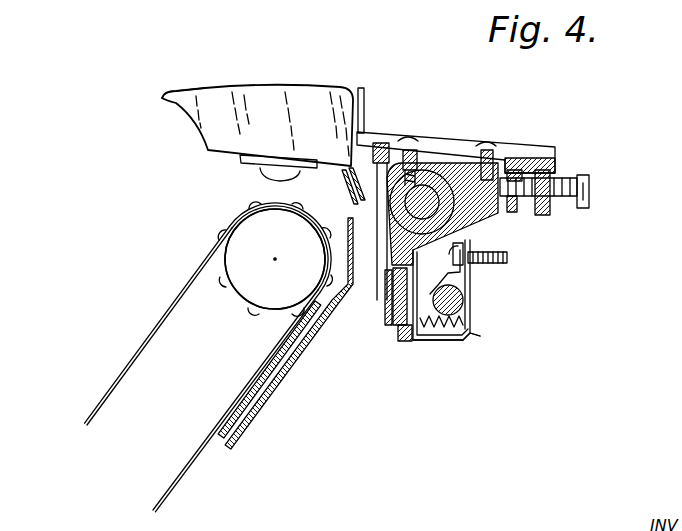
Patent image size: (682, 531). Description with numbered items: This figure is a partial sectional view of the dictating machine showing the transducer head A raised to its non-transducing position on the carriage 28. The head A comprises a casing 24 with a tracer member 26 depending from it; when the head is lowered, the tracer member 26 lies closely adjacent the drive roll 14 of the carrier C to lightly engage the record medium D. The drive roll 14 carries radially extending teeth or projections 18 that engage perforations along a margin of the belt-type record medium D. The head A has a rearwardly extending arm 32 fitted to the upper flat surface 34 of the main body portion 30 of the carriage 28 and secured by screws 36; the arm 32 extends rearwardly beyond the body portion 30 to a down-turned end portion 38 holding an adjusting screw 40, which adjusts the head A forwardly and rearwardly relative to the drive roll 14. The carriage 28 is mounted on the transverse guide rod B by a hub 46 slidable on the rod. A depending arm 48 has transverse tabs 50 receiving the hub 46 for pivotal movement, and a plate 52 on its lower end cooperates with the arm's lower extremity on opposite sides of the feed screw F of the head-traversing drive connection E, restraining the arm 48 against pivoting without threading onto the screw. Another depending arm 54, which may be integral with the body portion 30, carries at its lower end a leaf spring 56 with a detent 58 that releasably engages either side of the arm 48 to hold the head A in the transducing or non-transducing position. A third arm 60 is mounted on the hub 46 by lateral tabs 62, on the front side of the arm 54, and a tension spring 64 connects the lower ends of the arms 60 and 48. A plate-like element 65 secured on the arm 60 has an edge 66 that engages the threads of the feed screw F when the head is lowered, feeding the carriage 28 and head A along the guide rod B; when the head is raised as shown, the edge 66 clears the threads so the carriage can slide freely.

The transducer head A is at (263, 86).
The casing 24 is at (216, 90).
The tracer member 26 is at (258, 175).
The drivable carrier C is at (240, 250).
The drive roll 14 is at (304, 226).
The teeth or projections 18 is at (262, 205).
The record medium D is at (236, 217).
The third arm 60 is at (380, 253).
The hub 46 is at (388, 282).
The main body portion 30 is at (478, 160).
The lateral tabs 62 is at (380, 186).
The rearwardly extending arm 32 is at (431, 142).
The down-turned end portion 38 is at (557, 153).
The screws 36 is at (406, 147).
The support or guide rod B is at (425, 198).
The upper flat surface 34 is at (436, 192).
The adjusting screw 40 is at (590, 187).
The carriage 28 is at (502, 221).
The head-traversing drive connection E is at (471, 288).
The detent or latch 58 is at (472, 340).
The leaf spring 56 is at (426, 342).
The feed screw F is at (462, 305).
The tension spring 64 is at (447, 328).
The plate 52 is at (430, 284).
The transverse tabs 50 is at (466, 246).
The depending arm 48 is at (480, 271).
The depending arm 54 is at (396, 316).
The plate-like element 65 is at (390, 302).
The edge 66 is at (398, 337).